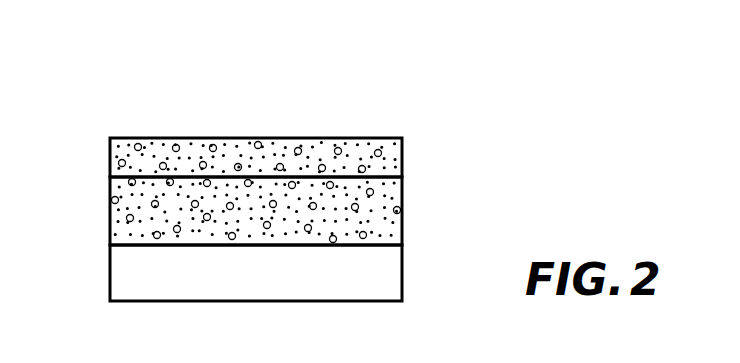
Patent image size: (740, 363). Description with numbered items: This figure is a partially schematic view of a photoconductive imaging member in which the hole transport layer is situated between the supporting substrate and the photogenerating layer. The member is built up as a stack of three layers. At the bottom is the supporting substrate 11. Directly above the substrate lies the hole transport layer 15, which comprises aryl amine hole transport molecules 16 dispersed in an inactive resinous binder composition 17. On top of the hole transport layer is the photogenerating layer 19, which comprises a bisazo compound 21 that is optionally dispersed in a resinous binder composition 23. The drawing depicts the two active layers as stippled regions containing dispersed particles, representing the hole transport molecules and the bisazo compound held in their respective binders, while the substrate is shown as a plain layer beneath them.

The supporting substrate 11 is at (402, 279).
The hole transport layer 15 is at (402, 237).
The aryl amine hole transport molecules 16 is at (392, 202).
The inactive resinous binder composition 17 is at (127, 219).
The photogenerating layer 19 is at (402, 162).
The bisazo compound 21 is at (122, 150).
The resinous binder composition 23 is at (176, 144).